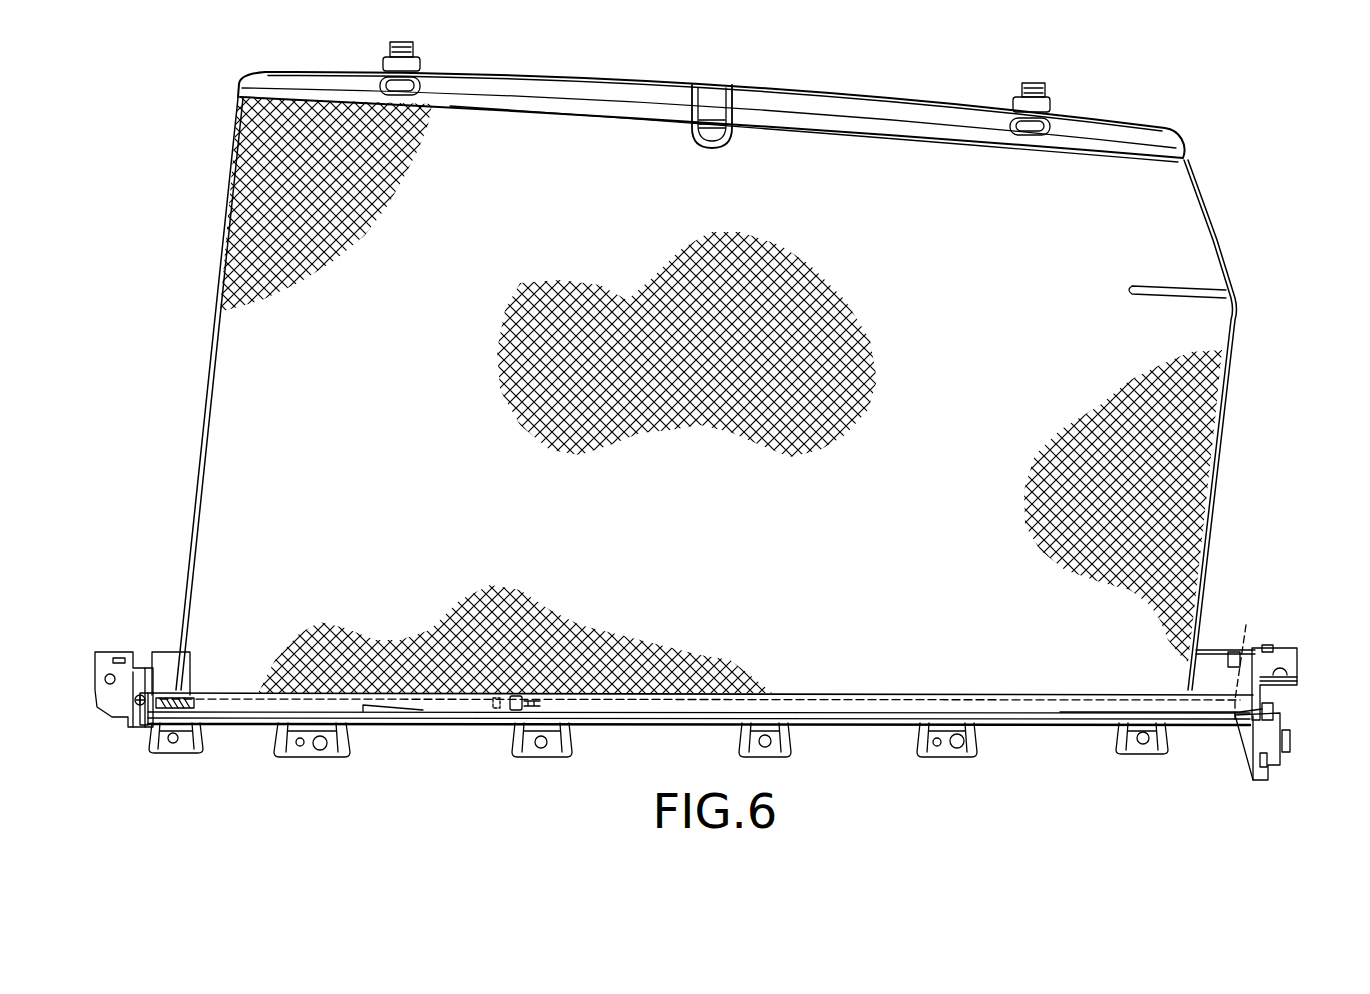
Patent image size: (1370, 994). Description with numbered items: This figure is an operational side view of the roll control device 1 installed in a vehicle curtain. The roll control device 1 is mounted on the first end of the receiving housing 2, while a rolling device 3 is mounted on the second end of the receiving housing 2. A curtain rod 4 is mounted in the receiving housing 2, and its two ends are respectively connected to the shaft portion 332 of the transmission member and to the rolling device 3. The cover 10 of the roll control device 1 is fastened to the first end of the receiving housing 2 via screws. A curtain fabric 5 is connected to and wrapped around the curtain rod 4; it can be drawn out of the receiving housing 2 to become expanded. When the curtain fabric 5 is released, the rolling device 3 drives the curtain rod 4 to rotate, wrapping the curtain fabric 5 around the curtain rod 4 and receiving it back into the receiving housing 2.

The roll control device 1 is at (1296, 704).
The receiving housing 2 is at (1068, 732).
The rolling device 3 is at (149, 689).
The curtain rod 4 is at (1103, 700).
The curtain fabric 5 is at (1241, 436).
The cover 10 is at (1274, 783).
The shaft portion 332 is at (1246, 625).